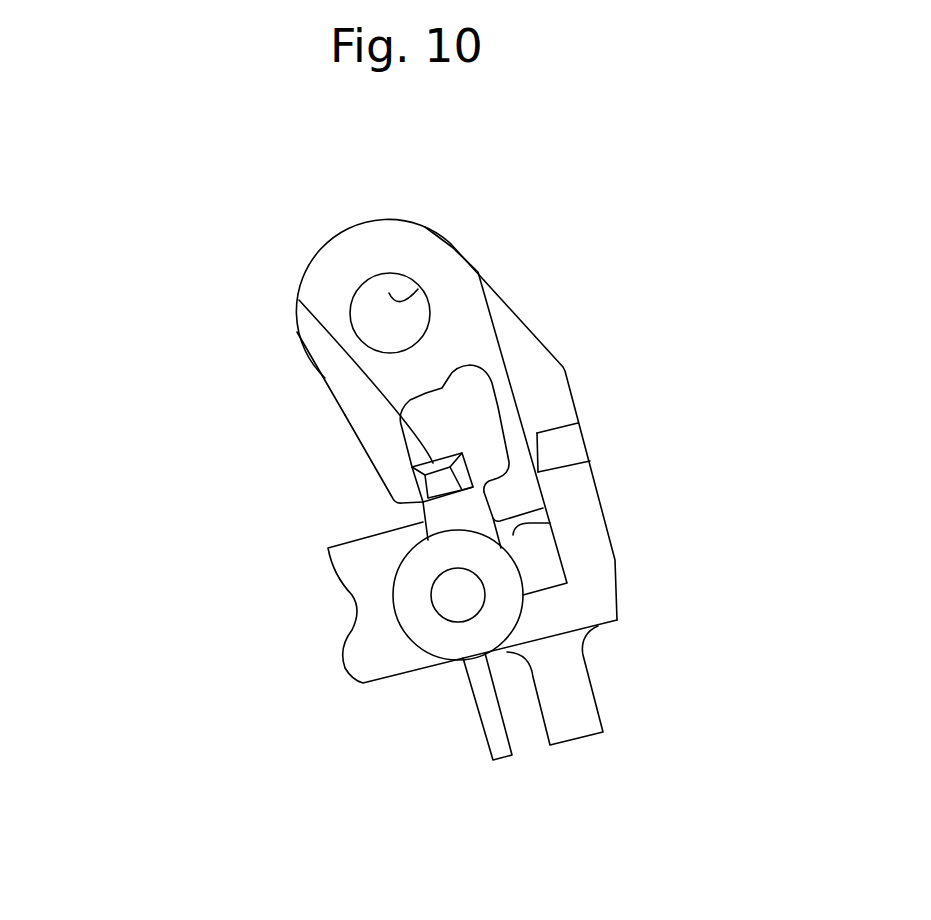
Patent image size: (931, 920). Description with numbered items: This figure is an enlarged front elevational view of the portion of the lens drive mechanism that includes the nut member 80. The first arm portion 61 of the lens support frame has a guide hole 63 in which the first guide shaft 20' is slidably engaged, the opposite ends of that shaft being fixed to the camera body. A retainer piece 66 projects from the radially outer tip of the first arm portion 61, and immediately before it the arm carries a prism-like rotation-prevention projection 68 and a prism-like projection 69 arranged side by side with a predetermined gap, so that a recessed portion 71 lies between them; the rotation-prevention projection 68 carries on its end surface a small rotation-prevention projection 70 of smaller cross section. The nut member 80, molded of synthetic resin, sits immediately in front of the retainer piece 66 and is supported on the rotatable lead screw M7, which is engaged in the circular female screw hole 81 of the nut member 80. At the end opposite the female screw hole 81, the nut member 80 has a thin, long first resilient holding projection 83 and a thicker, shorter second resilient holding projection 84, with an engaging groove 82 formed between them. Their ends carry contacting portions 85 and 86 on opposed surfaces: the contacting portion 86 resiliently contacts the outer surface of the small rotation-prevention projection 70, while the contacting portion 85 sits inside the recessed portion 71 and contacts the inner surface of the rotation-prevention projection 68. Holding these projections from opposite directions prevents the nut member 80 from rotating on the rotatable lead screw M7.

The retainer piece 66 is at (527, 355).
The nut member 80 is at (467, 303).
The rotatable lead screw M7 is at (367, 302).
The female screw hole 81 is at (389, 293).
The small rotation-prevention projection 70 is at (330, 392).
The second resilient holding projection 84 is at (362, 430).
The contacting portion 86 is at (403, 480).
The rotation-prevention projection 68 is at (435, 522).
The engaging groove 82 is at (510, 425).
The first resilient holding projection 83 is at (442, 388).
The contacting portion 85 is at (520, 497).
The prism-like projection 69 is at (578, 493).
The recessed portion 71 is at (497, 538).
The first arm portion 61 is at (355, 553).
The guide hole 63 is at (458, 568).
The first guide shaft 20' is at (418, 689).